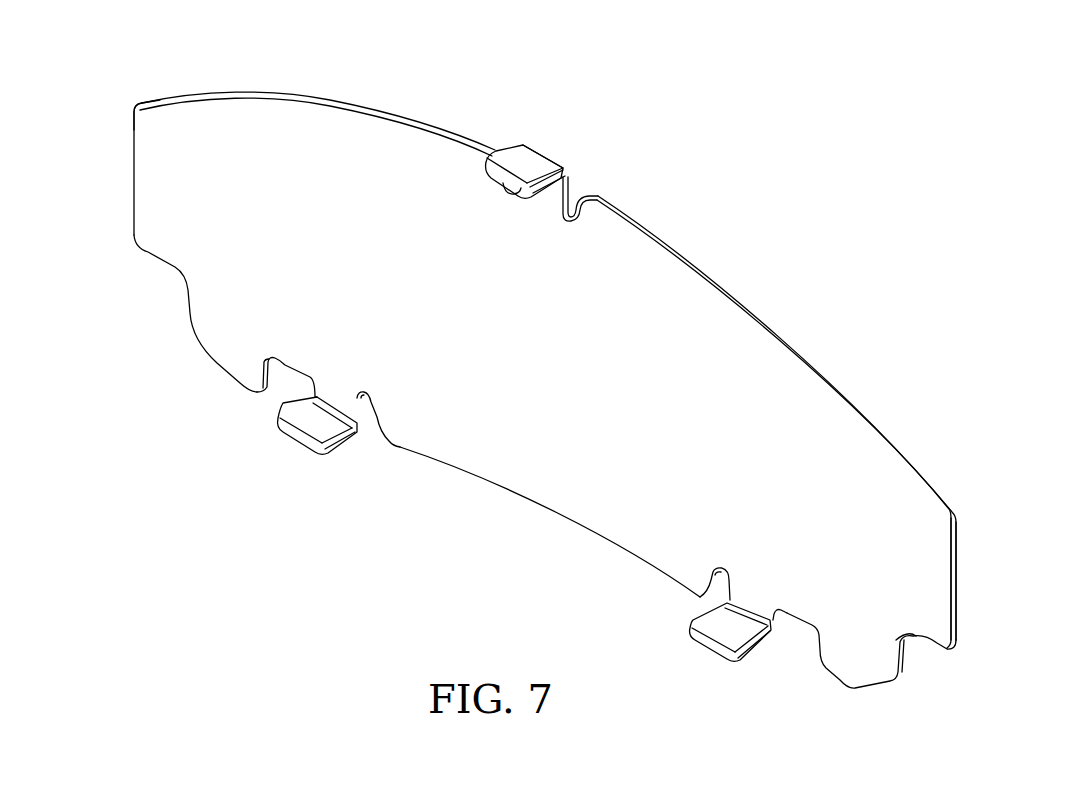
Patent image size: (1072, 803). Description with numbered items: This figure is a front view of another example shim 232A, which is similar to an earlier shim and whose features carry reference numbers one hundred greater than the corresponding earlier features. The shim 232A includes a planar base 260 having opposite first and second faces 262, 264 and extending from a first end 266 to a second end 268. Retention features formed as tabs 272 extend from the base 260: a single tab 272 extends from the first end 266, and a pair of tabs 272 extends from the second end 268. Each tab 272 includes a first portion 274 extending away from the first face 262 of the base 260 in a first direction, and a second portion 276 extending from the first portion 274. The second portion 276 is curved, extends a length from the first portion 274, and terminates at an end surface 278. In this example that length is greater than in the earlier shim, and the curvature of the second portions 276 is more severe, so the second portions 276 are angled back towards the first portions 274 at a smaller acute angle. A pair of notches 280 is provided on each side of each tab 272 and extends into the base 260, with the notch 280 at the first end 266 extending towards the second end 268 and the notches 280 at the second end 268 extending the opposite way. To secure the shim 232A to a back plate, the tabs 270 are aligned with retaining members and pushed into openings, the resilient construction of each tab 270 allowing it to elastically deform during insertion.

The shim 232A is at (129, 69).
The planar base 260 is at (588, 375).
The first face 262 is at (802, 383).
The second face 264 is at (960, 578).
The first end 266 is at (362, 72).
The second end 268 is at (511, 548).
The tab 270 is at (775, 292).
The tab 272 is at (541, 128).
The first portion 274 is at (543, 200).
The second portion 276 is at (550, 163).
The end surface 278 is at (553, 171).
The notch 280 is at (509, 213).